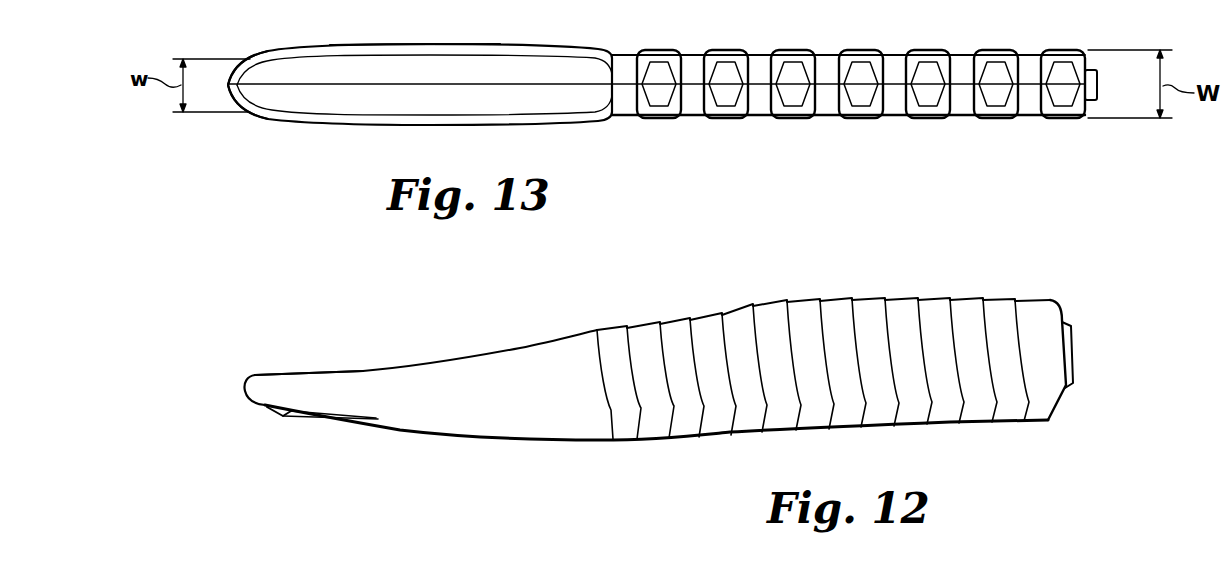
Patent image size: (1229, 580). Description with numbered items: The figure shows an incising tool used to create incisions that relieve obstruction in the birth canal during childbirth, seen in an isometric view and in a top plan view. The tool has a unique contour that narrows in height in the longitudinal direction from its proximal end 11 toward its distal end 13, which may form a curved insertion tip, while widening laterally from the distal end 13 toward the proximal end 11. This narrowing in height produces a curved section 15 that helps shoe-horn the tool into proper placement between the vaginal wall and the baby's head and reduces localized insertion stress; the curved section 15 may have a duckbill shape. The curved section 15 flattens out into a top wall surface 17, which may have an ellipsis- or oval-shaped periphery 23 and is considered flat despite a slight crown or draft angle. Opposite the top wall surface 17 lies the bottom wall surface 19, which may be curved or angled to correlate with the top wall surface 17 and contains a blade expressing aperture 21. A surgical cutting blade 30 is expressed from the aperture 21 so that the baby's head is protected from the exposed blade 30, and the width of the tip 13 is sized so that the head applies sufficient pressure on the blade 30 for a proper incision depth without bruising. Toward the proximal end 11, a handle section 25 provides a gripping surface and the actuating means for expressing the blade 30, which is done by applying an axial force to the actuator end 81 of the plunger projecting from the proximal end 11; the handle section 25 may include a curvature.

In FIG. 13, the proximal end 11 is at (1090, 56).
In FIG. 12, the proximal end 11 is at (1058, 312).
In FIG. 13, the distal end 13 is at (231, 97).
In FIG. 12, the distal end 13 is at (243, 388).
In FIG. 13, the curved section 15 is at (520, 125).
In FIG. 12, the curved section 15 is at (473, 390).
In FIG. 13, the top wall surface 17 is at (368, 97).
In FIG. 12, the top wall surface 17 is at (363, 370).
In FIG. 12, the bottom wall surface 19 is at (475, 440).
In FIG. 12, the blade expressing aperture 21 is at (275, 414).
In FIG. 13, the ellipsis- or oval-shaped periphery 23 is at (454, 45).
In FIG. 13, the handle section 25 is at (826, 55).
In FIG. 12, the handle section 25 is at (800, 302).
In FIG. 12, the surgical cutting blade 30 is at (291, 422).
In FIG. 13, the actuator end 81 is at (1097, 88).
In FIG. 12, the actuator end 81 is at (1073, 358).